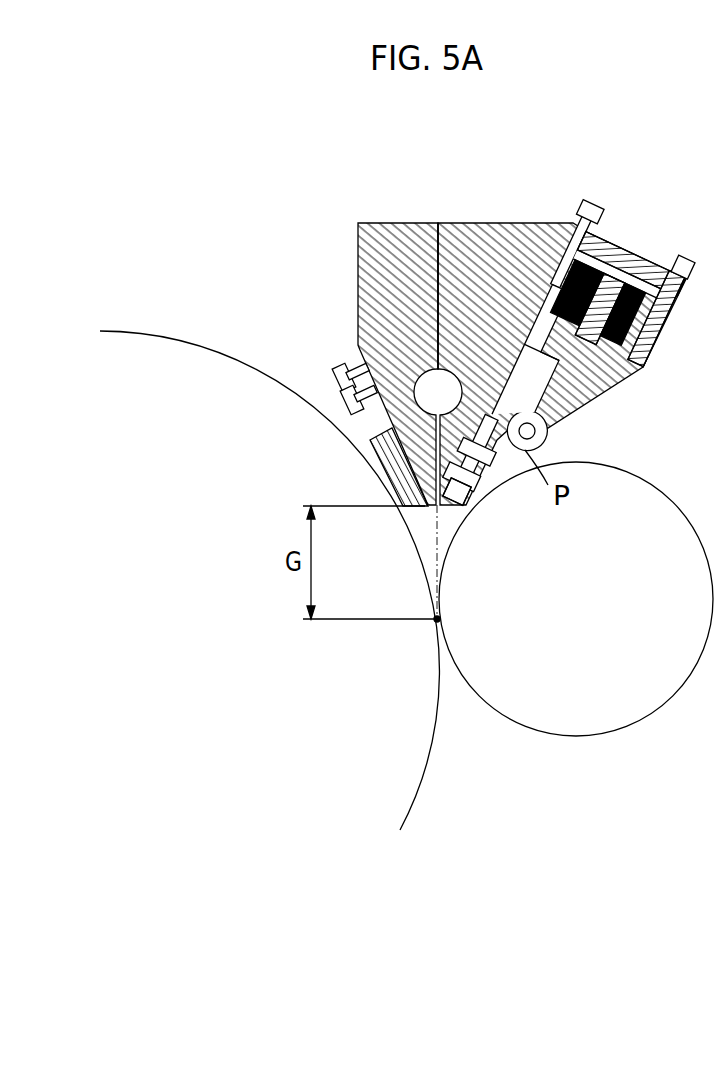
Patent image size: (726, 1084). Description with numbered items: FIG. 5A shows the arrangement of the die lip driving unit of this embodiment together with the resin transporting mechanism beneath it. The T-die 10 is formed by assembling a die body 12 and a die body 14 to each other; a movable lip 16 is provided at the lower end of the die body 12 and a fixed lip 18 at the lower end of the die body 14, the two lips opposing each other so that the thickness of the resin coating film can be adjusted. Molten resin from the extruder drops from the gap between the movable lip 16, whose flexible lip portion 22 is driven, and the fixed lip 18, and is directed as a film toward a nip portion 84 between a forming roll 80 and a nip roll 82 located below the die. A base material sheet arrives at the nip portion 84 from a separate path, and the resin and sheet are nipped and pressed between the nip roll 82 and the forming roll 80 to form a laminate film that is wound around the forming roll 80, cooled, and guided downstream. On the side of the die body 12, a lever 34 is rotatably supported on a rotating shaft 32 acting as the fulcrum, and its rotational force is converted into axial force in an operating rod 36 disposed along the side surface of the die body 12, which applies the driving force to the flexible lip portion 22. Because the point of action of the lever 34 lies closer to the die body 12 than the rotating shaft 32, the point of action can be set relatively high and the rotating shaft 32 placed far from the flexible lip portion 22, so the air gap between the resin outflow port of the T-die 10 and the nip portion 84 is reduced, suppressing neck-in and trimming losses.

The T-die 10 is at (515, 353).
The die body 12 is at (500, 222).
The die body 14 is at (390, 222).
The movable lip 16 is at (491, 532).
The fixed lip 18 is at (423, 510).
The flexible lip portion 22 is at (465, 501).
The rotating shaft 32 is at (536, 432).
The lever 34 is at (598, 352).
The operating rod 36 is at (498, 452).
The forming roll 80 is at (190, 345).
The nip roll 82 is at (662, 497).
The nip portion 84 is at (434, 623).